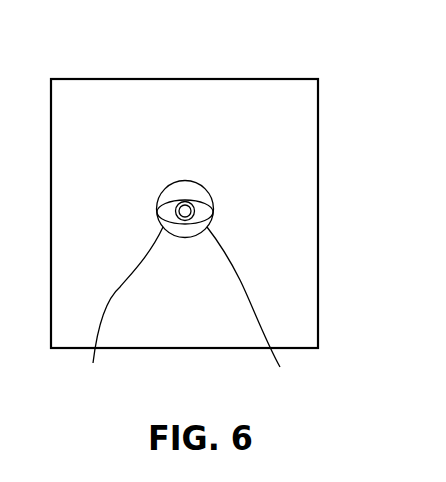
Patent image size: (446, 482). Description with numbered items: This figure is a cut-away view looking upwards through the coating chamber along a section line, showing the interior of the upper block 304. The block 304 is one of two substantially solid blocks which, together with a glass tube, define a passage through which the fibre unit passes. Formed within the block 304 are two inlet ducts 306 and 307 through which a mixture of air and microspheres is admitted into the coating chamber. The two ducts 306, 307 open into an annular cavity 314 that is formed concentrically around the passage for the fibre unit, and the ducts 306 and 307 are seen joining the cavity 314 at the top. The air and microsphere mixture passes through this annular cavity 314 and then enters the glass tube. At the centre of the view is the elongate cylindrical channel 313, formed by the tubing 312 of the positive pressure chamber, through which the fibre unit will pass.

The upper block 304 is at (256, 94).
The inlet duct 306 is at (123, 309).
The inlet duct 307 is at (255, 314).
The tubing 312 is at (185, 207).
The elongate cylindrical channel 313 is at (190, 207).
The annular cavity 314 is at (183, 207).